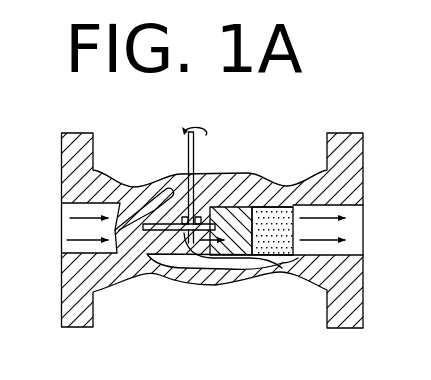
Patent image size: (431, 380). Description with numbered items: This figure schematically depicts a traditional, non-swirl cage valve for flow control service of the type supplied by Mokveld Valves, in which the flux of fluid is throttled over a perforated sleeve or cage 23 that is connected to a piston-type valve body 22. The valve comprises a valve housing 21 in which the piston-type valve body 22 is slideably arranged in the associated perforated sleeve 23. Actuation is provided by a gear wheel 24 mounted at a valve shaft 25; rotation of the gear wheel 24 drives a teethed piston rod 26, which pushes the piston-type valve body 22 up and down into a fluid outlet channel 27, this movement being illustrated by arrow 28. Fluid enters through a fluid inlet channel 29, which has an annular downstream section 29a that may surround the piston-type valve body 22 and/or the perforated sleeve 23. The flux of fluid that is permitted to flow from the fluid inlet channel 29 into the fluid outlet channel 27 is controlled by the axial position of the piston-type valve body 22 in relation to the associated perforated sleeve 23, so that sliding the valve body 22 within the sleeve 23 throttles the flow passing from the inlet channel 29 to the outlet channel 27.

The valve housing 21 is at (224, 172).
The piston-type valve body 22 is at (240, 262).
The perforated sleeve 23 is at (279, 268).
The gear wheel 24 is at (184, 260).
The valve shaft 25 is at (188, 153).
The teethed piston rod 26 is at (157, 262).
The fluid outlet channel 27 is at (350, 227).
The arrow 28 is at (215, 263).
The fluid inlet channel 29 is at (61, 228).
The annular downstream section 29a is at (276, 198).